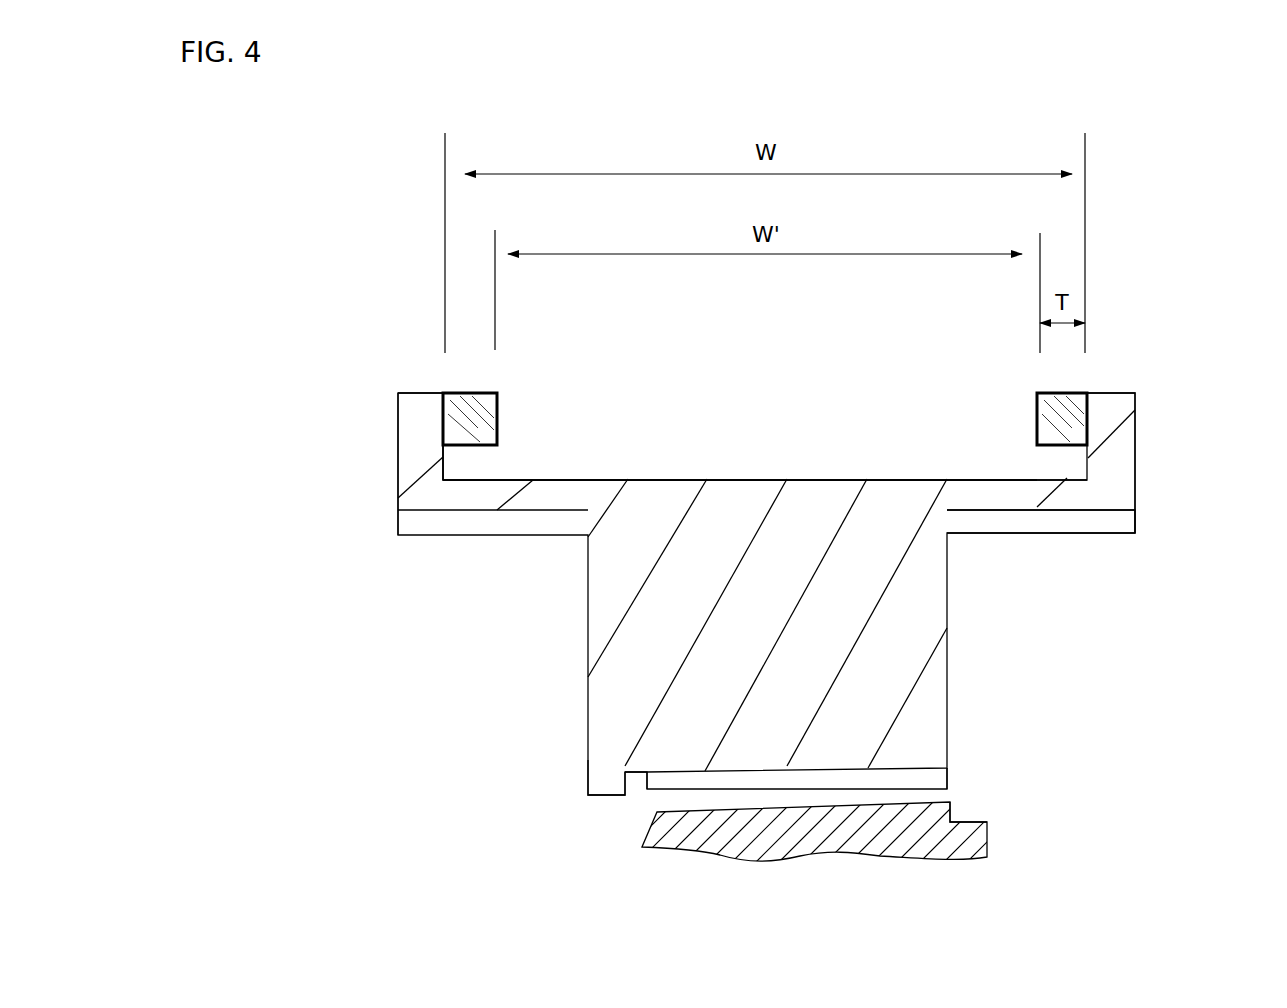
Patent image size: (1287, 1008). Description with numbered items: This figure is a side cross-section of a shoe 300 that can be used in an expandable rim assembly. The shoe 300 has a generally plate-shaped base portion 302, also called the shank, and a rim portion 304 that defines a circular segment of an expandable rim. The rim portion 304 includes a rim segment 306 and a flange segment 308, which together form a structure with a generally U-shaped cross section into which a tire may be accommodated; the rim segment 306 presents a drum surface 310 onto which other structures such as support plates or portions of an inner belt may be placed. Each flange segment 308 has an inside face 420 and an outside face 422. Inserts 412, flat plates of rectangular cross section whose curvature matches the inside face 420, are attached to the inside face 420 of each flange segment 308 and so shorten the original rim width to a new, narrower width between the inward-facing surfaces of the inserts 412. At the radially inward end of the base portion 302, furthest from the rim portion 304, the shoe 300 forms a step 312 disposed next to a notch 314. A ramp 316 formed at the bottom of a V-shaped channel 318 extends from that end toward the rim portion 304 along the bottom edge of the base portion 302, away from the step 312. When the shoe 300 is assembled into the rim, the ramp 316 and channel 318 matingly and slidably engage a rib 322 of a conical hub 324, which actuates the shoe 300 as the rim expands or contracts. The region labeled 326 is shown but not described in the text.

The shoe 300 is at (1170, 393).
The base portion 302 is at (972, 647).
The rim portion 304 is at (1140, 487).
The rim segment 306 is at (530, 490).
The flange segment 308 is at (421, 428).
The drum surface 310 is at (820, 478).
The step 312 is at (603, 763).
The notch 314 is at (636, 790).
The ramp 316 is at (866, 766).
The V-shaped channel 318 is at (962, 772).
The rib 322 is at (958, 822).
The conical hub 324 is at (1005, 845).
The right raised block 326 is at (1118, 380).
The insert 412 is at (479, 424).
The inside face 420 is at (448, 466).
The outside face 422 is at (395, 435).